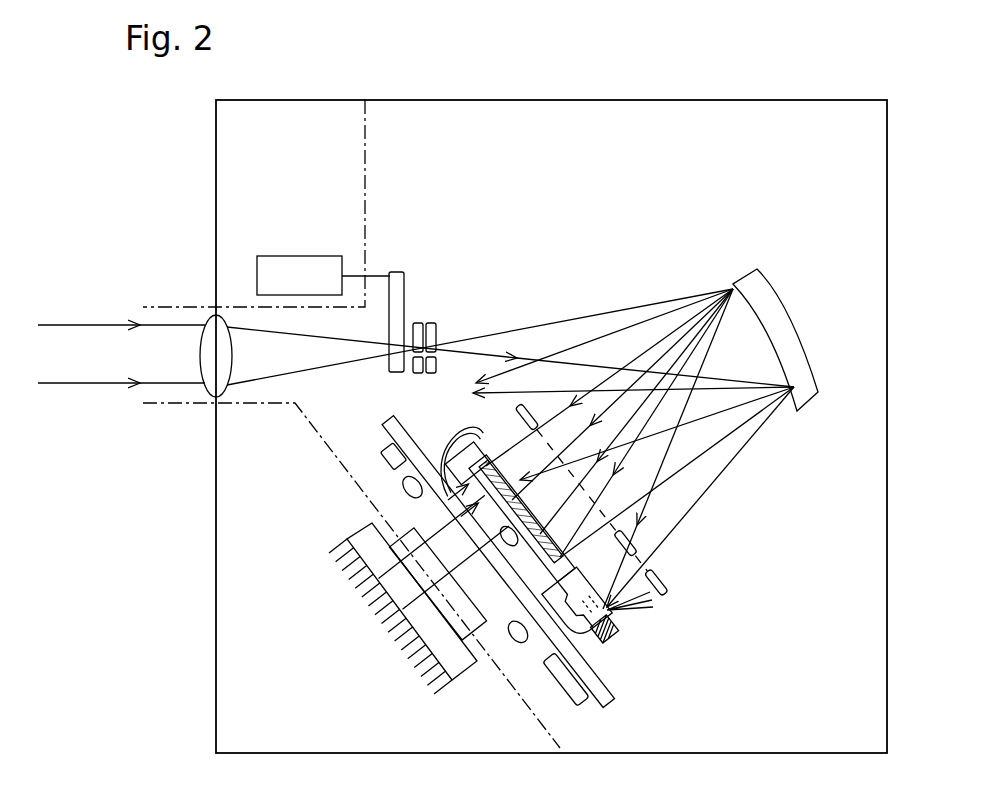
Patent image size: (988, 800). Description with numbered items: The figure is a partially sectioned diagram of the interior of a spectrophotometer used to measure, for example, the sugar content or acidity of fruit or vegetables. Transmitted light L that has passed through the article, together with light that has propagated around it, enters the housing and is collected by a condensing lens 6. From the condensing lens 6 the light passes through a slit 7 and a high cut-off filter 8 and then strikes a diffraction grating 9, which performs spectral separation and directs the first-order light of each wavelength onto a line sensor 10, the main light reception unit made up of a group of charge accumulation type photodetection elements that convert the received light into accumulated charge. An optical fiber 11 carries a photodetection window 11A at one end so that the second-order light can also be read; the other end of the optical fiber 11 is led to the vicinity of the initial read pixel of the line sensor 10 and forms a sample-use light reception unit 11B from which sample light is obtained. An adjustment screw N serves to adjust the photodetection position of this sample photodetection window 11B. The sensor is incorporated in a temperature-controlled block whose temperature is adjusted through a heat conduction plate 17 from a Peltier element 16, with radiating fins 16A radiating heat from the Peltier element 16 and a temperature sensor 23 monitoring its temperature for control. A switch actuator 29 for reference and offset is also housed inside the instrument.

The condensing lens 6 is at (211, 400).
The slit 7 is at (417, 320).
The high cut-off filter 8 is at (431, 322).
The diffraction grating 9 is at (783, 317).
The line sensor 10 is at (400, 581).
The optical fiber 11 is at (577, 640).
The photodetection window 11A is at (607, 613).
The sample-use light reception unit 11B is at (455, 488).
The Peltier element 16 is at (360, 533).
The radiating fins 16A is at (438, 667).
The heat conduction plate 17 is at (492, 618).
The temperature sensor 23 is at (388, 606).
The switch actuator 29 is at (305, 246).
The adjustment screw N is at (621, 624).
The transmitted light L is at (73, 388).